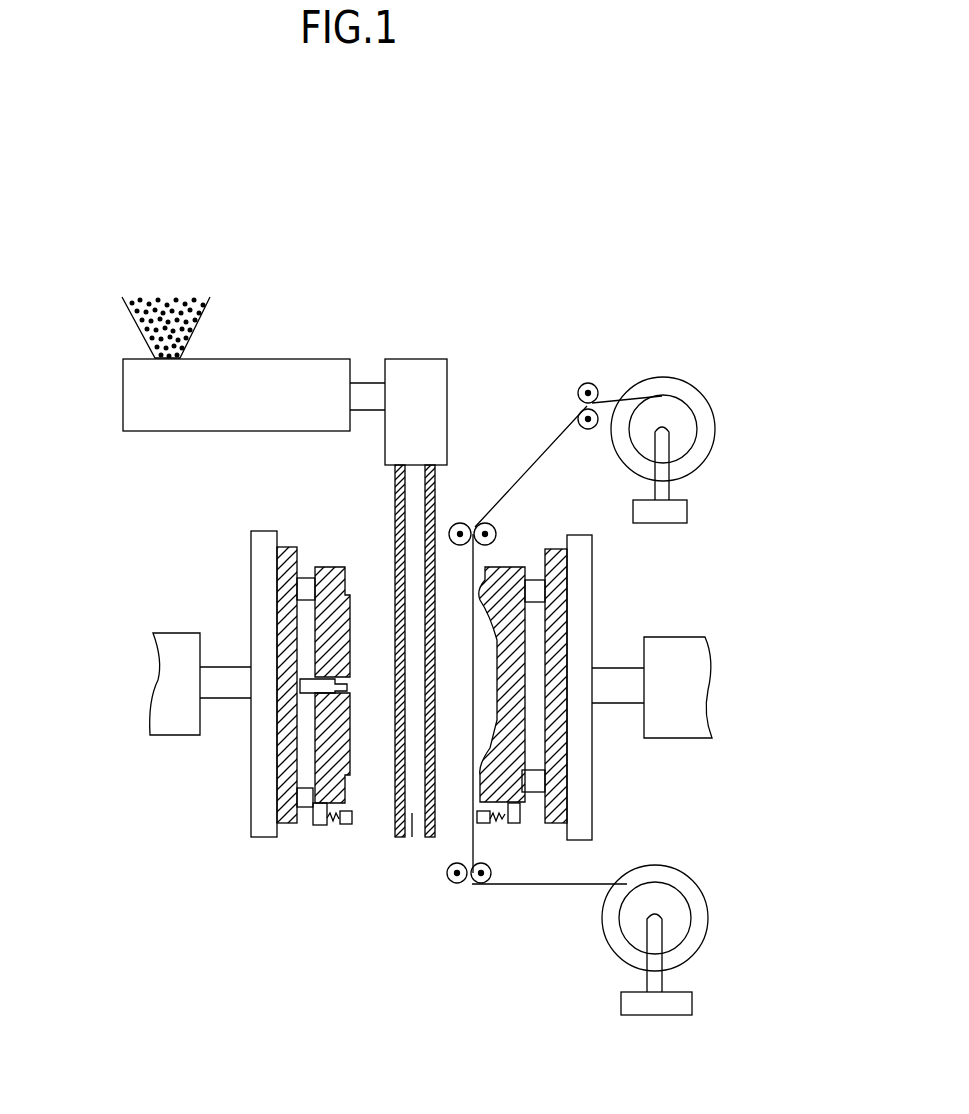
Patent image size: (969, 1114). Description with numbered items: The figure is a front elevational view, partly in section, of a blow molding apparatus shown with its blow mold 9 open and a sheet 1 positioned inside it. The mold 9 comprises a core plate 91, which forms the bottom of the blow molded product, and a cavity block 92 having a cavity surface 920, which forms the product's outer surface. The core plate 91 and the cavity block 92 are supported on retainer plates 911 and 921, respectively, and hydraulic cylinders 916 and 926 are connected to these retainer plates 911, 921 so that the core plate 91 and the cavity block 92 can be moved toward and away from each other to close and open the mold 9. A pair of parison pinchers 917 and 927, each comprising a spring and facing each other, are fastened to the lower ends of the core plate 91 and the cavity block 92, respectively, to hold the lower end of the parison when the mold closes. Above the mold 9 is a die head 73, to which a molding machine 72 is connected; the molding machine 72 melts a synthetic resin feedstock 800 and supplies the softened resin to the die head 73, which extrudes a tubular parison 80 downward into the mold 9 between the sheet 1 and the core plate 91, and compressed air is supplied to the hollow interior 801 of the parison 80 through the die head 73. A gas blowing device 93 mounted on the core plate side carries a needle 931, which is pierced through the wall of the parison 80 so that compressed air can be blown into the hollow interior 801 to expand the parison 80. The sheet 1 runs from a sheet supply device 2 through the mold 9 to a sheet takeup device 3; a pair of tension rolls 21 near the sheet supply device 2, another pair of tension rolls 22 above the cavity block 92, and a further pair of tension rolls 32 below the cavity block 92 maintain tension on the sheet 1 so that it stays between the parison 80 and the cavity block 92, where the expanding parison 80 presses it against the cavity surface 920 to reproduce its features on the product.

The sheet 1 is at (542, 443).
The sheet supply device 2 is at (681, 423).
The sheet takeup device 3 is at (675, 930).
The blow mold 9 is at (208, 500).
The tension rolls 21 is at (592, 383).
The tension rolls 22 is at (460, 523).
The tension rolls 32 is at (460, 883).
The molding machine 72 is at (268, 377).
The die head 73 is at (423, 383).
The parison 80 is at (390, 825).
The synthetic resin feedstock 800 is at (168, 297).
The hollow interior 801 is at (410, 833).
The core plate 91 is at (325, 760).
The cavity block 92 is at (510, 628).
The gas blowing device 93 is at (317, 692).
The retainer plate 911 is at (262, 603).
The hydraulic cylinder 916 is at (173, 680).
The parison pincher 917 is at (345, 825).
The cavity surface 920 is at (495, 707).
The retainer plate 921 is at (583, 568).
The hydraulic cylinder 926 is at (687, 685).
The parison pincher 927 is at (485, 827).
The needle 931 is at (340, 683).